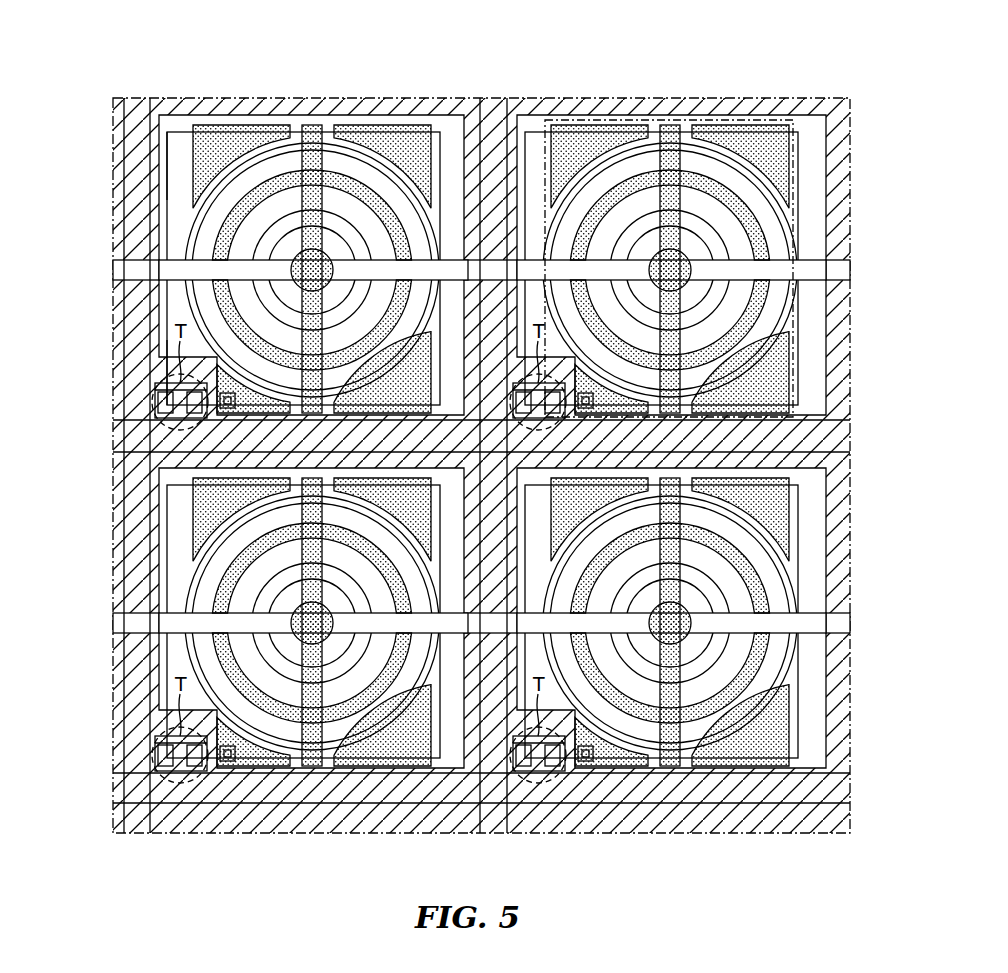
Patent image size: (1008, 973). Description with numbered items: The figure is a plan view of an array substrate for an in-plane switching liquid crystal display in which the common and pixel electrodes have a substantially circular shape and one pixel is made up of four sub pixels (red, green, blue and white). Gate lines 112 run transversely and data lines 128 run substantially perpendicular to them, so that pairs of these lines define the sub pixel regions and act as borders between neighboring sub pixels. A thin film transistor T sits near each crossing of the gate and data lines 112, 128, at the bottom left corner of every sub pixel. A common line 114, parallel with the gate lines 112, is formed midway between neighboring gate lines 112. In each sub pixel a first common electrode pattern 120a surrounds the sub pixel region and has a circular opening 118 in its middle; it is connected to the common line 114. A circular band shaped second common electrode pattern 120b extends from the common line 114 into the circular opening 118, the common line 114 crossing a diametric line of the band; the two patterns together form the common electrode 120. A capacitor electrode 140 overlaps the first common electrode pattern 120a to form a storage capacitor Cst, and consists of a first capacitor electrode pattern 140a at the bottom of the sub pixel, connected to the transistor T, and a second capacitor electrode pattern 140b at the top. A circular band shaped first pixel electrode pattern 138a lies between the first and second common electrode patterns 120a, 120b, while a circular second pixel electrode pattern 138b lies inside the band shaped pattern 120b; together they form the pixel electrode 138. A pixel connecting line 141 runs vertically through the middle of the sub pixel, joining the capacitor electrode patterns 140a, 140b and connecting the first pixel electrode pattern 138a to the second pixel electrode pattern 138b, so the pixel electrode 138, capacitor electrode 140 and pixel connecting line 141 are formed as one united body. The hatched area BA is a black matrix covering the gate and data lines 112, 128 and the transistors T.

The common electrode 120 is at (312, 213).
The first common electrode pattern 120a is at (245, 124).
The second common electrode pattern 120b is at (290, 224).
The circular opening 118 is at (347, 160).
The pixel electrode 138 is at (347, 192).
The first pixel electrode pattern 138a is at (378, 192).
The second pixel electrode pattern 138b is at (333, 272).
The capacitor electrode 140 is at (231, 268).
The first capacitor electrode pattern 140a is at (232, 385).
The second capacitor electrode pattern 140b is at (200, 166).
The pixel connecting line 141 is at (322, 204).
The common line 114 is at (850, 261).
The gate line 112 is at (850, 421).
The data line 128 is at (150, 835).
The black matrix BA is at (165, 519).
The storage capacitor Cst is at (793, 162).
The thin film transistor T is at (193, 375).